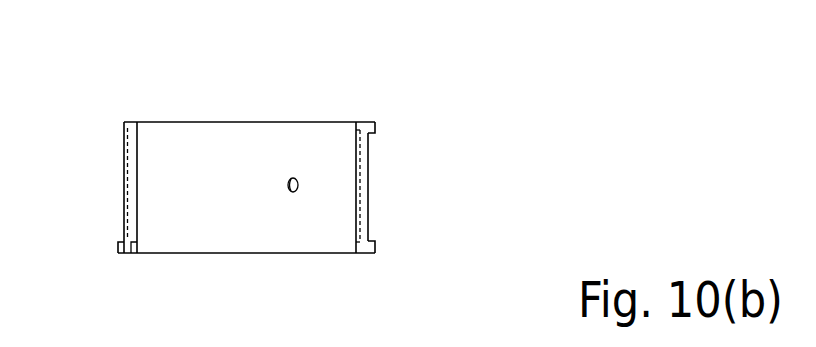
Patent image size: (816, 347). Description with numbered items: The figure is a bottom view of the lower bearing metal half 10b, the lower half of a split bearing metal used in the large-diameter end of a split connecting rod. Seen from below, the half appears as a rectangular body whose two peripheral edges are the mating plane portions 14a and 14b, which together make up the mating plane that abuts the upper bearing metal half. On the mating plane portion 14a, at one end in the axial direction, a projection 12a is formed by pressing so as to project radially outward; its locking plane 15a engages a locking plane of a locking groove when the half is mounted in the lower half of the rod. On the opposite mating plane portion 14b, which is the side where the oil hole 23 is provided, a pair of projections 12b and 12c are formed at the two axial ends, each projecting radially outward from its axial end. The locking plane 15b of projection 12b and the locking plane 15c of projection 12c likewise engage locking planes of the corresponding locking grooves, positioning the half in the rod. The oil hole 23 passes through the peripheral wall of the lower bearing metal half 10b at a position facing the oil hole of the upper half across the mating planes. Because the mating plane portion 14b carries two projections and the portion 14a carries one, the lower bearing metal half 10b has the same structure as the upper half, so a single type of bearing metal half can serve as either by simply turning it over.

The lower bearing metal half 10b is at (256, 98).
The mating plane portion 14a is at (130, 170).
The mating plane portion 14b is at (367, 200).
The locking plane 15a is at (124, 242).
The locking plane 15b is at (370, 135).
The locking plane 15c is at (372, 240).
The projection 12a is at (118, 249).
The projection 12b is at (377, 127).
The projection 12c is at (375, 255).
The oil hole 23 is at (288, 184).